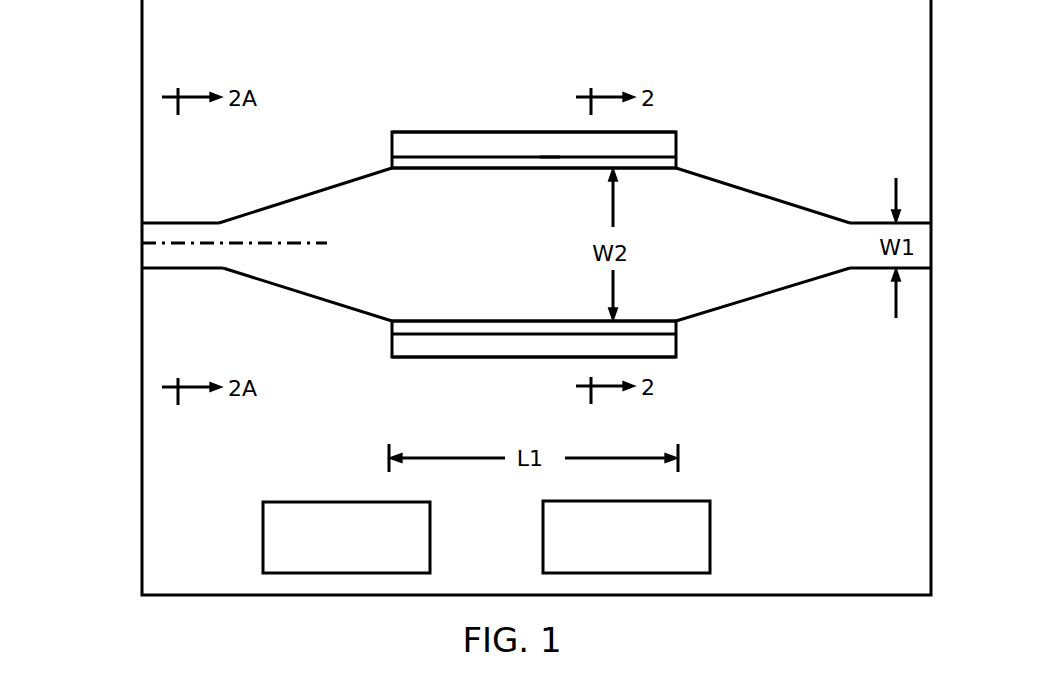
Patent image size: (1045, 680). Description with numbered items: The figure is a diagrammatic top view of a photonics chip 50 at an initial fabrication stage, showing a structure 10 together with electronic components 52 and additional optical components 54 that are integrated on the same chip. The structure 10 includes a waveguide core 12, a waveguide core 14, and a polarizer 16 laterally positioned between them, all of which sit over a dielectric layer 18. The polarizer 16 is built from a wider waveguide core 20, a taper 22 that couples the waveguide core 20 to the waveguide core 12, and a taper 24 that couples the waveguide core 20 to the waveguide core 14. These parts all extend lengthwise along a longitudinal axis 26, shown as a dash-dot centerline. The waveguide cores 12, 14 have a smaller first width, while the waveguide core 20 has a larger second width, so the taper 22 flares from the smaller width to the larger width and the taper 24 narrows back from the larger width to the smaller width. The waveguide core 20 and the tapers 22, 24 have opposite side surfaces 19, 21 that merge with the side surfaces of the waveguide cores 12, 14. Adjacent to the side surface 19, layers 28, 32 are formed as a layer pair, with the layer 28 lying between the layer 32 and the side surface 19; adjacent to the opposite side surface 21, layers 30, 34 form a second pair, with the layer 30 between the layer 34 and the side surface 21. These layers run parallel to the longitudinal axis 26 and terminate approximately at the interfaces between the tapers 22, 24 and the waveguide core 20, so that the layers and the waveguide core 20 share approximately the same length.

The structure 10 is at (286, 66).
The waveguide core 12 is at (190, 231).
The waveguide core 14 is at (868, 252).
The polarizer 16 is at (401, 116).
The dielectric layer 18 is at (188, 473).
The side surface 19 is at (540, 167).
The waveguide core 20 is at (492, 204).
The side surface 21 is at (563, 323).
The taper 22 is at (333, 262).
The taper 24 is at (745, 222).
The longitudinal axis 26 is at (255, 241).
The layer 28 is at (458, 160).
The layer 30 is at (503, 328).
The layer 32 is at (428, 143).
The layer 34 is at (441, 348).
The photonics chip 50 is at (125, 70).
The electronic components 52 is at (710, 534).
The optical components 54 is at (430, 540).